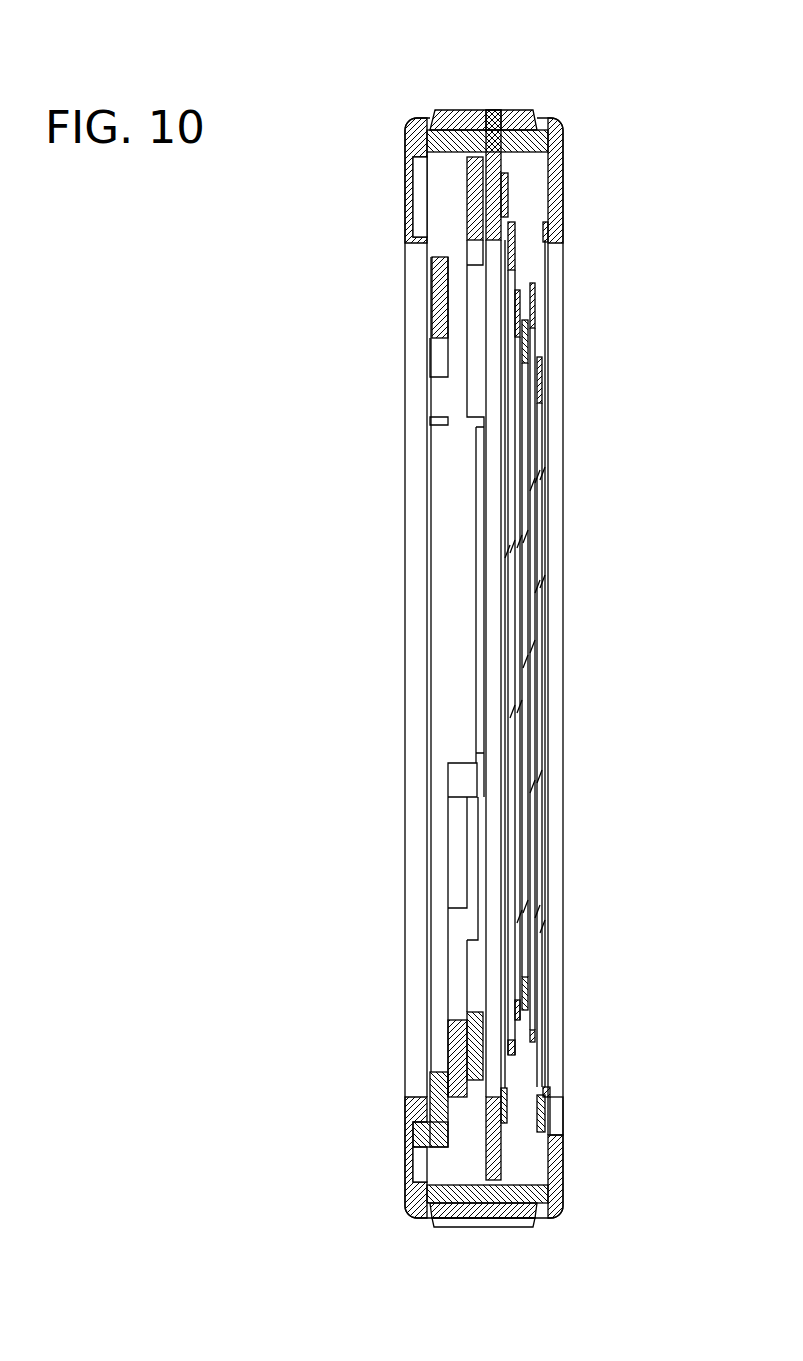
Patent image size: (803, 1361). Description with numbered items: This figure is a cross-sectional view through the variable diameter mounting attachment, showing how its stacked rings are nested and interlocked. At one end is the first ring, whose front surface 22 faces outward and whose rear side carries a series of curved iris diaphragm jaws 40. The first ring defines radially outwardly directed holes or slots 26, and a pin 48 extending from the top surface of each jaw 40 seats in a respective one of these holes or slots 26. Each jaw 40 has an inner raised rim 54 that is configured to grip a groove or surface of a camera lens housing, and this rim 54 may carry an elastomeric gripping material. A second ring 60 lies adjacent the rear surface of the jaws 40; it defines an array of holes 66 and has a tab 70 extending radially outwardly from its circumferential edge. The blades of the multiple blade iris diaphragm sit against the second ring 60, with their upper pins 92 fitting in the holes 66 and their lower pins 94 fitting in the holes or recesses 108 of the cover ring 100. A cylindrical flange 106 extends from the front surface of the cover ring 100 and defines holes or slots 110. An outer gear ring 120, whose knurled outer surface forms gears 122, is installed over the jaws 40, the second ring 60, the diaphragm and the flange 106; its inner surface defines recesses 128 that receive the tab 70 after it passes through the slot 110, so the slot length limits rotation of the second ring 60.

The front surface 22 is at (405, 157).
The holes or slots 26 is at (412, 211).
The jaws 40 is at (448, 622).
The pins 48 is at (418, 1135).
The inner raised rim 54 is at (480, 545).
The second ring 60 is at (560, 130).
The holes 66 is at (507, 185).
The tab 70 is at (500, 110).
The pins 92 is at (507, 202).
The pins 94 is at (550, 1093).
The cover ring 100 is at (563, 1153).
The flange 106 is at (508, 1197).
The holes or recesses 108 is at (553, 1120).
The holes or slots 110 is at (480, 131).
The outer gear ring 120 is at (535, 112).
The gears 122 is at (510, 1228).
The slots or recesses 128 is at (492, 114).